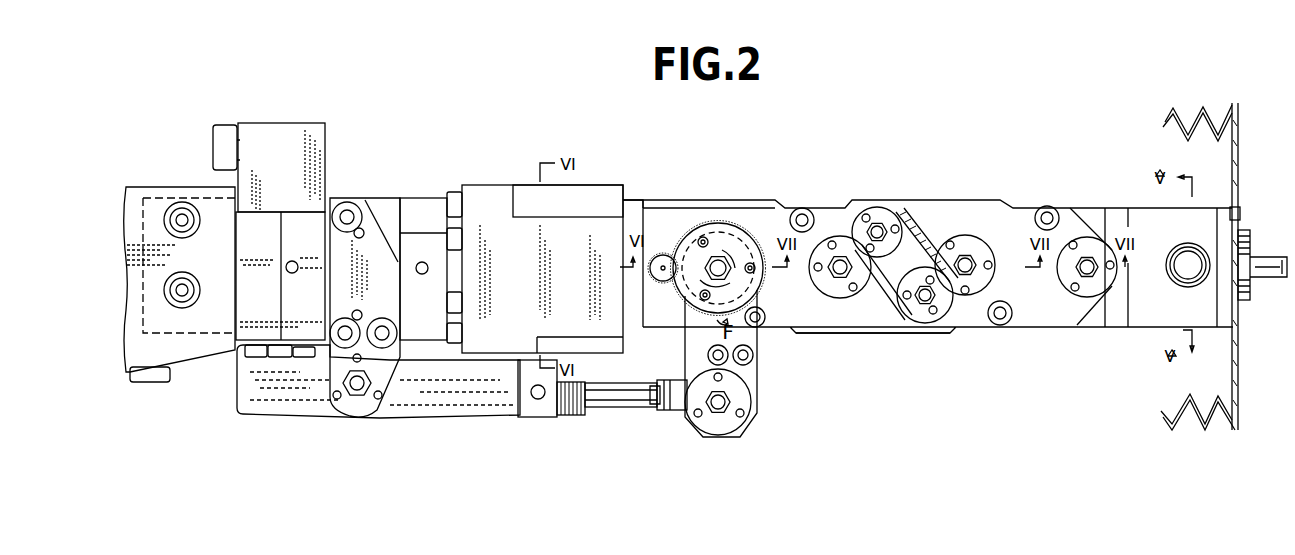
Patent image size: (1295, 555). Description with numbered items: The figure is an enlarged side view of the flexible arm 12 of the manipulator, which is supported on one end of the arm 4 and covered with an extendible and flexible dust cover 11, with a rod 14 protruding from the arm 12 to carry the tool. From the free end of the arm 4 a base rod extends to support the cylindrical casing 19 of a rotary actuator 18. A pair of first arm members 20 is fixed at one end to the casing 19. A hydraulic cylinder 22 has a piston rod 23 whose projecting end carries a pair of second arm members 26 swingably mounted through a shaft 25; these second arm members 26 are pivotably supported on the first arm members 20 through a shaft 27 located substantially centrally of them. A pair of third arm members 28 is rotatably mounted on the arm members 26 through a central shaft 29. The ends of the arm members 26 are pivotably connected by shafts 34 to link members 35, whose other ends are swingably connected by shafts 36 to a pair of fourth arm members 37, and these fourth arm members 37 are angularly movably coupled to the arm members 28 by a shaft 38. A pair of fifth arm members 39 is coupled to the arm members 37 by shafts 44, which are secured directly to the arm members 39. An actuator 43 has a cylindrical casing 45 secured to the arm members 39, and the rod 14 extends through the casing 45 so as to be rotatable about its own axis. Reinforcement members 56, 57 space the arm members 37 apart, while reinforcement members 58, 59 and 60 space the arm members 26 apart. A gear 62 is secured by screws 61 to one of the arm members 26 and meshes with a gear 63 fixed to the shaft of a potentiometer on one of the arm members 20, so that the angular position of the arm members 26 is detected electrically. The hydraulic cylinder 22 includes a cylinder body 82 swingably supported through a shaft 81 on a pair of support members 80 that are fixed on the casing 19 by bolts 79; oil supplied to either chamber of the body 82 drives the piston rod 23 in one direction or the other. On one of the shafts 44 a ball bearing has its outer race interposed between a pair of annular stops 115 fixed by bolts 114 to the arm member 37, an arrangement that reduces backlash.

The arm 4 is at (192, 355).
The dust cover 11 is at (1180, 110).
The flexible arm 12 is at (840, 195).
The rod 14 is at (1277, 257).
The rotary actuator 18 is at (583, 178).
The cylindrical casing 19 is at (598, 198).
The first arm members 20 is at (655, 208).
The hydraulic cylinder 22 is at (462, 418).
The piston rod 23 is at (617, 412).
The shaft 25 is at (717, 404).
The second arm members 26 is at (762, 333).
The shaft 27 is at (723, 257).
The third arm members 28 is at (873, 324).
The shaft 29 is at (843, 325).
The shafts 34 is at (878, 227).
The link members 35 is at (927, 247).
The shafts 36 is at (923, 323).
The fourth arm members 37 is at (995, 217).
The shaft 38 is at (975, 323).
The fifth arm members 39 is at (1096, 207).
The actuator 43 is at (1162, 330).
The shafts 44 is at (1088, 278).
The cylindrical casing 45 is at (1202, 310).
The reinforcement member 56 is at (998, 325).
The reinforcement member 57 is at (1045, 207).
The reinforcement member 58 is at (802, 208).
The reinforcement member 59 is at (747, 360).
The reinforcement member 60 is at (735, 378).
The screws 61 is at (700, 238).
The gear 62 is at (767, 299).
The gear 63 is at (665, 255).
The bolts 79 is at (358, 205).
The support members 80 is at (397, 358).
The shaft 81 is at (353, 397).
The cylinder body 82 is at (478, 405).
The bolts 114 is at (1073, 241).
The annular stops 115 is at (1107, 280).